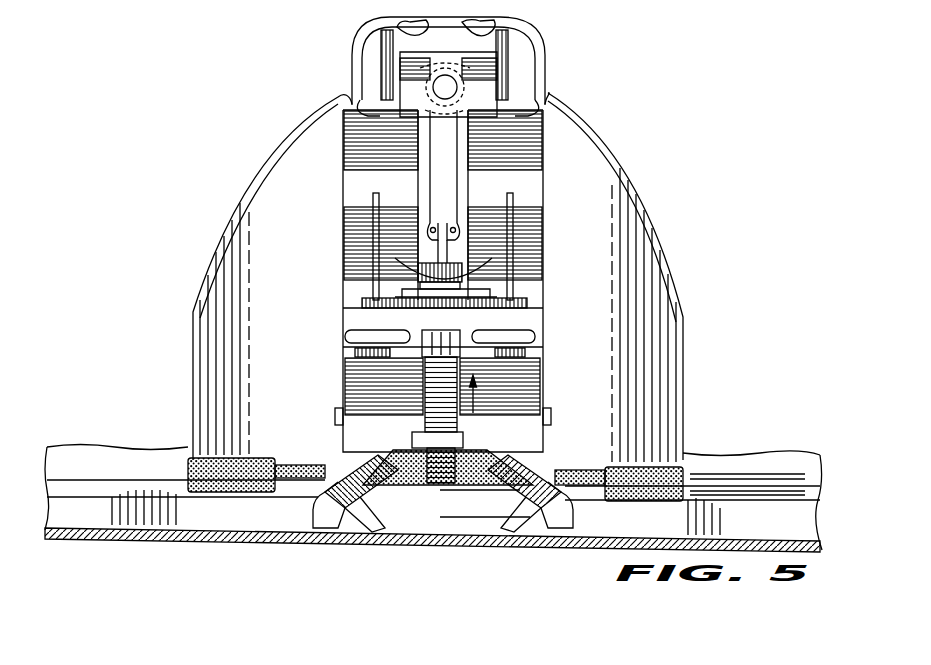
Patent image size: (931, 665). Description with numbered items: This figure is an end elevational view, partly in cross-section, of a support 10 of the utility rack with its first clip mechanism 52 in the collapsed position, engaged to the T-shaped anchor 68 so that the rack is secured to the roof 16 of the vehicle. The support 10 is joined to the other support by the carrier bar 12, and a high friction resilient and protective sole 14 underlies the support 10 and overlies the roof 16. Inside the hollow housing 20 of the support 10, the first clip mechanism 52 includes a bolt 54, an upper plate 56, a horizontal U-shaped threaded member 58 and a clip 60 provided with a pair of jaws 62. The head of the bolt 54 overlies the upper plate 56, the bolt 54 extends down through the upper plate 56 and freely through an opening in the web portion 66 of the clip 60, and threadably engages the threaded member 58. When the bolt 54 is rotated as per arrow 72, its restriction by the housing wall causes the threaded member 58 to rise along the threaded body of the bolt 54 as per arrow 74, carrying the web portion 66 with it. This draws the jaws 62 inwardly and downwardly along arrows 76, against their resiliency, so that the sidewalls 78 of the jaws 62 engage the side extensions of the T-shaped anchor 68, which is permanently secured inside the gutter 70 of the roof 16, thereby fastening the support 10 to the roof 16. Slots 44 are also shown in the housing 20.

The support 10 is at (670, 247).
The carrier bar 12 is at (538, 37).
The sole 14 is at (187, 472).
The roof 16 is at (65, 437).
The housing 20 is at (583, 187).
The slot 44 is at (345, 333).
The first clip mechanism 52 is at (305, 512).
The bolt 54 is at (437, 355).
The upper plate 56 is at (473, 292).
The threaded member 58 is at (482, 432).
The clip 60 is at (360, 512).
The jaws 62 is at (327, 527).
The web portion 66 is at (413, 485).
The T-shaped anchor 68 is at (480, 528).
The gutter 70 is at (795, 513).
The arrow 72 is at (445, 246).
The arrow 74 is at (488, 375).
The arrows 76 is at (325, 478).
The sidewalls 78 is at (328, 493).